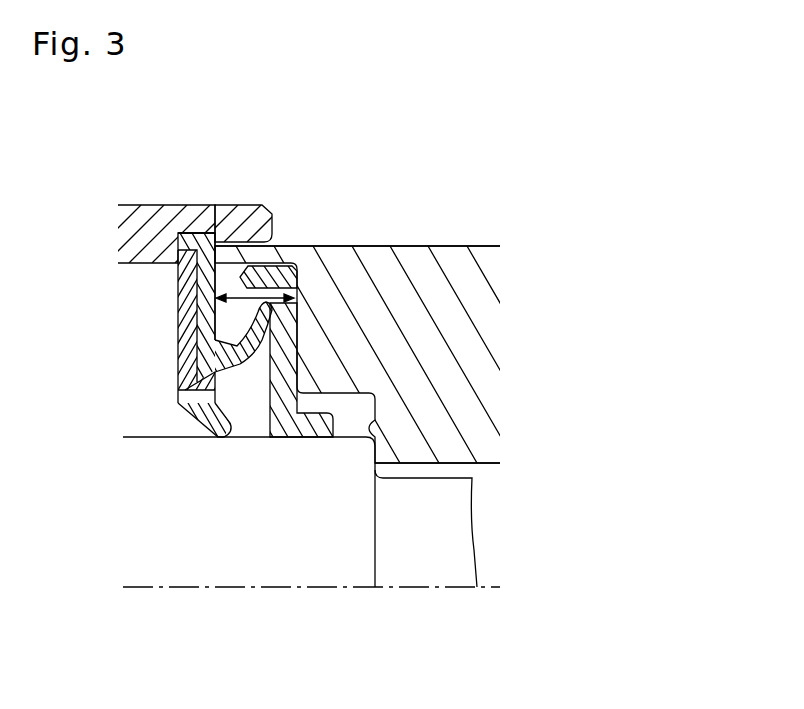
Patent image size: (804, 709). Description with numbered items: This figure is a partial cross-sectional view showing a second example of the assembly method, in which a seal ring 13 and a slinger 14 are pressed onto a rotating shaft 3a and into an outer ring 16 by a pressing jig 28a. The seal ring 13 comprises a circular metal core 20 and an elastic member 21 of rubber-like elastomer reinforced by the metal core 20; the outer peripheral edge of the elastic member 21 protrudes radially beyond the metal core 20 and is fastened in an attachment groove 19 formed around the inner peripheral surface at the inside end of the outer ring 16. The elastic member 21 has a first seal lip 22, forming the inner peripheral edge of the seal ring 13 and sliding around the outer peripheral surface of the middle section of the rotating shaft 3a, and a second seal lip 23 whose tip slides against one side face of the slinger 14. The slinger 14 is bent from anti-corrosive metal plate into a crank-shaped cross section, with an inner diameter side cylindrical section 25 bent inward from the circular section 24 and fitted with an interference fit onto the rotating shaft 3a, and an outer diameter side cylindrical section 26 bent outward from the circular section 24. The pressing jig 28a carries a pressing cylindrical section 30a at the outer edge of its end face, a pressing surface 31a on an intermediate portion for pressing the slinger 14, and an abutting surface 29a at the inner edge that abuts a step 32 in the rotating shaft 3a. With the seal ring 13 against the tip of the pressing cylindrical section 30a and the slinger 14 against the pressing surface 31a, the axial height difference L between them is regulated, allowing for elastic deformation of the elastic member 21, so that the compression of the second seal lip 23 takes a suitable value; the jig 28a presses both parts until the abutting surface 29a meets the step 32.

The seal ring 13 is at (197, 222).
The slinger 14 is at (300, 320).
The outer ring 16 is at (137, 218).
The attachment groove 19 is at (212, 232).
The metal core 20 is at (180, 313).
The elastic member 21 is at (205, 333).
The first seal lip 22 is at (221, 434).
The second seal lip 23 is at (278, 303).
The circular section 24 is at (322, 347).
The inner diameter side cylindrical section 25 is at (303, 438).
The outer diameter side cylindrical section 26 is at (298, 260).
The pressing jig 28a is at (450, 292).
The abutting surface 29a is at (378, 420).
The pressing cylindrical section 30a is at (258, 244).
The pressing surface 31a is at (178, 389).
The step 32 is at (384, 442).
The rotating shaft 3a is at (157, 550).
The height difference L is at (214, 297).